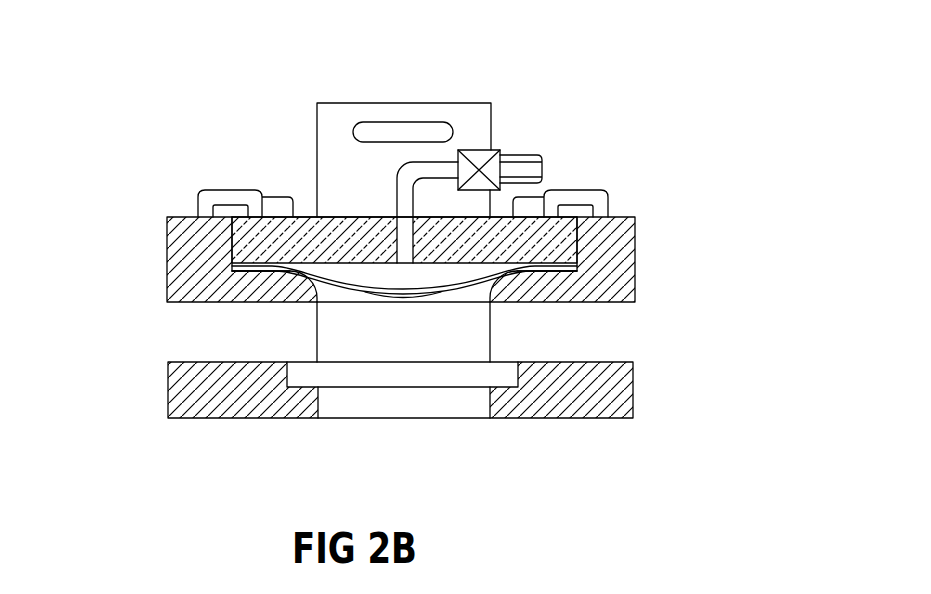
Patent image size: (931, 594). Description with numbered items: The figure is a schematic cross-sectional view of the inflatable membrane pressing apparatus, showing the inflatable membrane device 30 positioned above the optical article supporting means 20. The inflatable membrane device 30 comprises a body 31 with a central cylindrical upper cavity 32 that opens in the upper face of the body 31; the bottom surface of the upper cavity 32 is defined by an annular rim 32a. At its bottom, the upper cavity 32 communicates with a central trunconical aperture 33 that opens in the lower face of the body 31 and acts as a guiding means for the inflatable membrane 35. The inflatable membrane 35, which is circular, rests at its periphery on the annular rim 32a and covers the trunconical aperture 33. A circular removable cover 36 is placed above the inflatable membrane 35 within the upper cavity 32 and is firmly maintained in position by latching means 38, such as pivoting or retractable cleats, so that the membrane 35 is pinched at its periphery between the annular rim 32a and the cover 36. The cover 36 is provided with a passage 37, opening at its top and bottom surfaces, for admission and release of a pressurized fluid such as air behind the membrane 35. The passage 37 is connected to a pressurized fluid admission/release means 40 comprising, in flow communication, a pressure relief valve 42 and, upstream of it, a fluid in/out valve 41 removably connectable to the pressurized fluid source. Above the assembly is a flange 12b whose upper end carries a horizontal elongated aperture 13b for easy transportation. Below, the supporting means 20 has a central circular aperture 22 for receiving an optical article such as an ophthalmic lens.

The flange 12b is at (337, 122).
The horizontal elongated aperture 13b is at (382, 132).
The optical article supporting means 20 is at (637, 392).
The central circular aperture 22 is at (470, 375).
The inflatable membrane device 30 is at (382, 304).
The body 31 is at (638, 266).
The central cylindrical upper cavity 32 is at (577, 240).
The annular rim 32a is at (262, 303).
The central trunconical aperture 33 is at (308, 303).
The inflatable membrane 35 is at (440, 294).
The removable cover 36 is at (334, 234).
The passage 37 is at (395, 236).
The latching means 38 is at (400, 169).
The pressurized fluid admission/release means 40 is at (505, 147).
The fluid in/out valve 41 is at (533, 153).
The pressure relief valve 42 is at (482, 148).